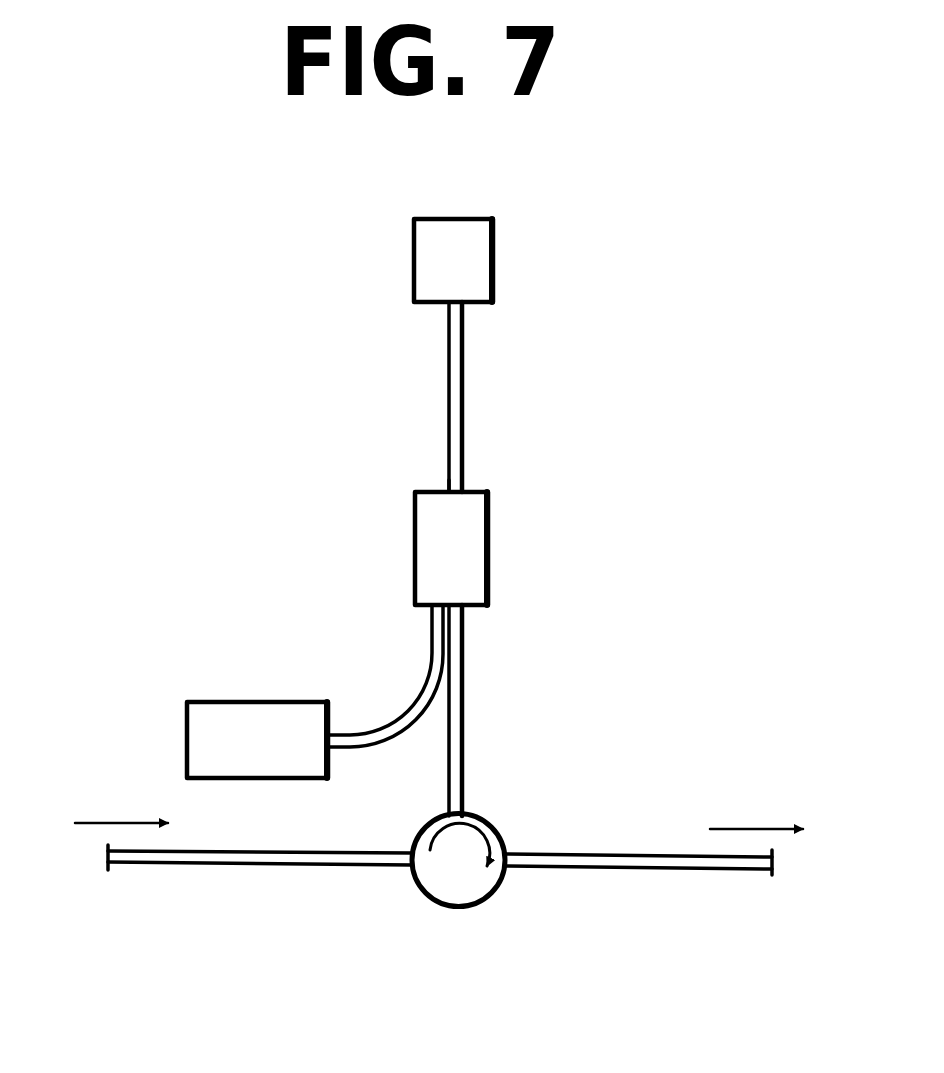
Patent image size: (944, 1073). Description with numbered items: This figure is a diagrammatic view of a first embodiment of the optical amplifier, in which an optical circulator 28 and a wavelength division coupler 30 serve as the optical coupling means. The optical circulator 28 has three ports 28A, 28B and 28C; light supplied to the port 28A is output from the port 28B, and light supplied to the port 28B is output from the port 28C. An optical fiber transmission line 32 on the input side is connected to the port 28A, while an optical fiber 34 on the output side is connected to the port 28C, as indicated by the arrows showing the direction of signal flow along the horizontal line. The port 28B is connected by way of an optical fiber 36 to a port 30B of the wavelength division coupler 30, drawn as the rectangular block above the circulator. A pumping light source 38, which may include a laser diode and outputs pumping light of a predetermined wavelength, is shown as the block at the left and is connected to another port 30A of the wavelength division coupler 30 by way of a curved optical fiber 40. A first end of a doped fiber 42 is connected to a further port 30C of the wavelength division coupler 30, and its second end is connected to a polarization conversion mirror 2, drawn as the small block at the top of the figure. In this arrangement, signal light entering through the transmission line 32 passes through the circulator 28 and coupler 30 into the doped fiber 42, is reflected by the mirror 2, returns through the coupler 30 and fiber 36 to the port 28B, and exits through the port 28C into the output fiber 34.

The polarization conversion mirror 2 is at (450, 228).
The doped fiber 42 is at (463, 360).
The wavelength division coupler 30 is at (490, 525).
The port 30A is at (425, 610).
The port 30B is at (470, 608).
The port 30C is at (447, 490).
The optical fiber 36 is at (466, 700).
The optical fiber 40 is at (400, 718).
The pumping light source 38 is at (203, 712).
The optical circulator 28 is at (458, 908).
The port 28A is at (413, 870).
The port 28B is at (464, 813).
The port 28C is at (504, 877).
The optical fiber transmission line 32 is at (158, 865).
The optical fiber 34 is at (736, 872).